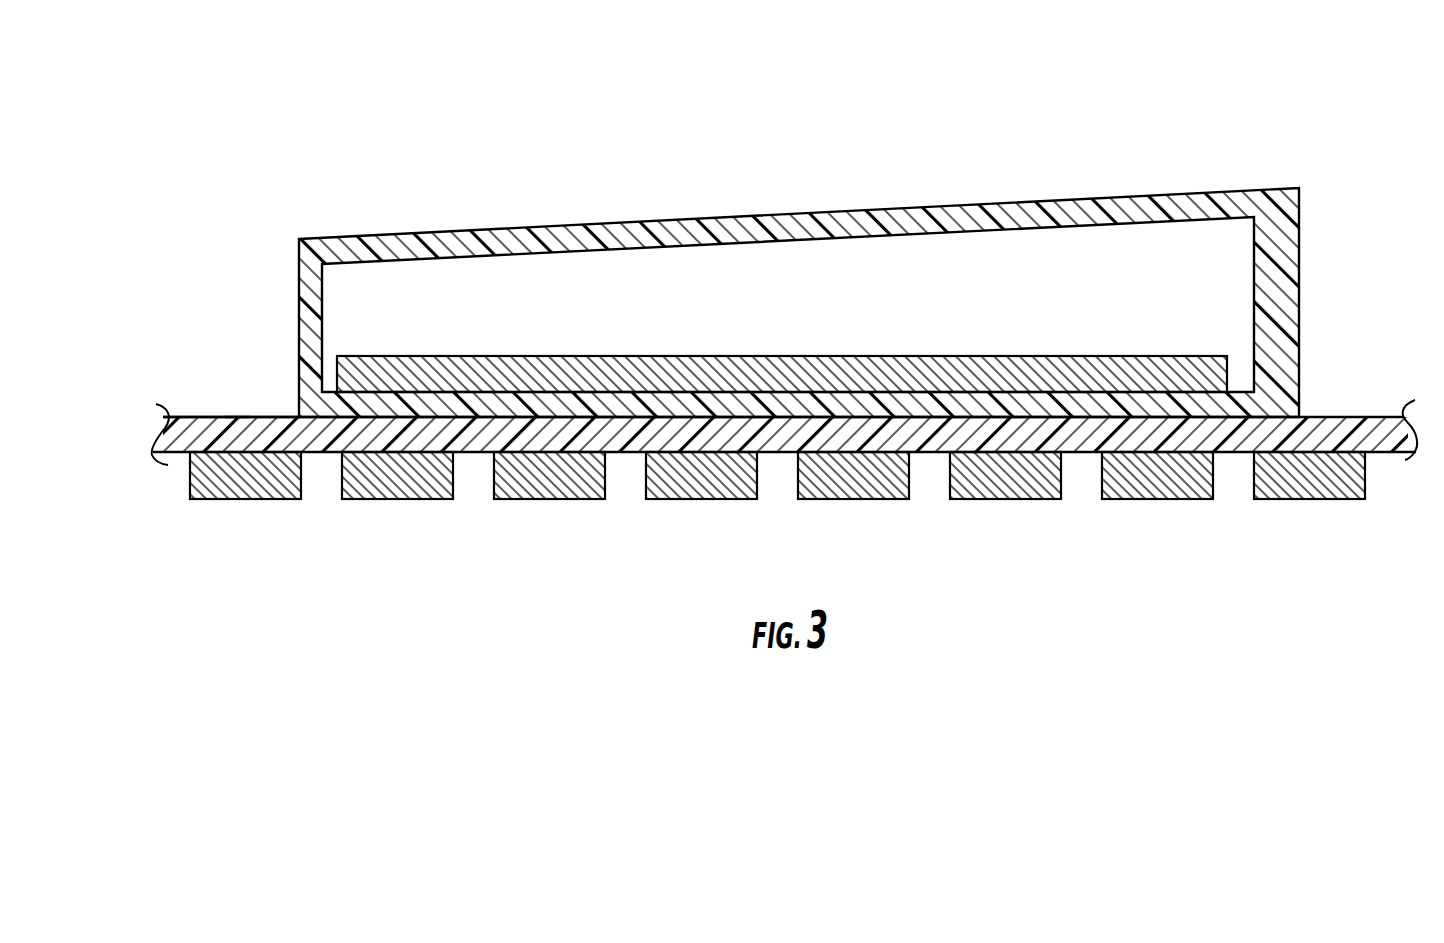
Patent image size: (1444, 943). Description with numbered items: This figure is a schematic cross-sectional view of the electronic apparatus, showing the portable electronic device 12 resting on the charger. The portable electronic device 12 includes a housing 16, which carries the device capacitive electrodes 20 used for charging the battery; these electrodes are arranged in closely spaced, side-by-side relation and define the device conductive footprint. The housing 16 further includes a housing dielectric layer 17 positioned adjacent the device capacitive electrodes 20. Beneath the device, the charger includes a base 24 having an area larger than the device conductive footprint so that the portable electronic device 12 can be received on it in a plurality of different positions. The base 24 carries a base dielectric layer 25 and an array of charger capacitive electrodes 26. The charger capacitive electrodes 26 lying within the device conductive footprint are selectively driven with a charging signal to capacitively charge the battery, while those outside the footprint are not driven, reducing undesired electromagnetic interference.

The portable electronic device 12 is at (849, 241).
The housing 16 is at (1219, 188).
The housing dielectric layer 17 is at (1304, 410).
The device capacitive electrodes 20 is at (1167, 355).
The base 24 is at (237, 417).
The base dielectric layer 25 is at (196, 416).
The charger capacitive electrodes 26 is at (1005, 499).